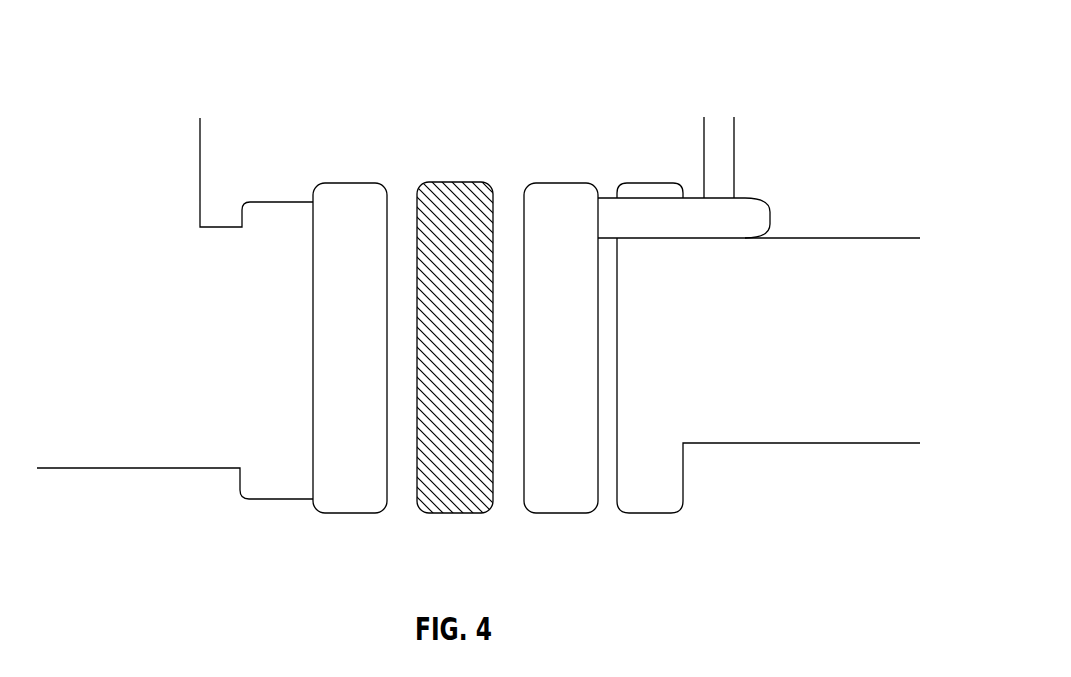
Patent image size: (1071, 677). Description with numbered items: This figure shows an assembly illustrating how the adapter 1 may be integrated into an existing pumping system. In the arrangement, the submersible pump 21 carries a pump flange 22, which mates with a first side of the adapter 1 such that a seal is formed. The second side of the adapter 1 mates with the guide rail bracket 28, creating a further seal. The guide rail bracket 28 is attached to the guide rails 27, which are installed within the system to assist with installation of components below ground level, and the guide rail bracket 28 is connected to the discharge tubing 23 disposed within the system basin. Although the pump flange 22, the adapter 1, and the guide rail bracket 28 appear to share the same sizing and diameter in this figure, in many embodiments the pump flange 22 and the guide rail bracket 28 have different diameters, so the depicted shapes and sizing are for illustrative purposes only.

The adapter 1 is at (438, 183).
The submersible pump 21 is at (150, 382).
The pump flange 22 is at (363, 145).
The discharge tubing 23 is at (693, 382).
The guide rails 27 is at (745, 149).
The guide rail bracket 28 is at (608, 145).